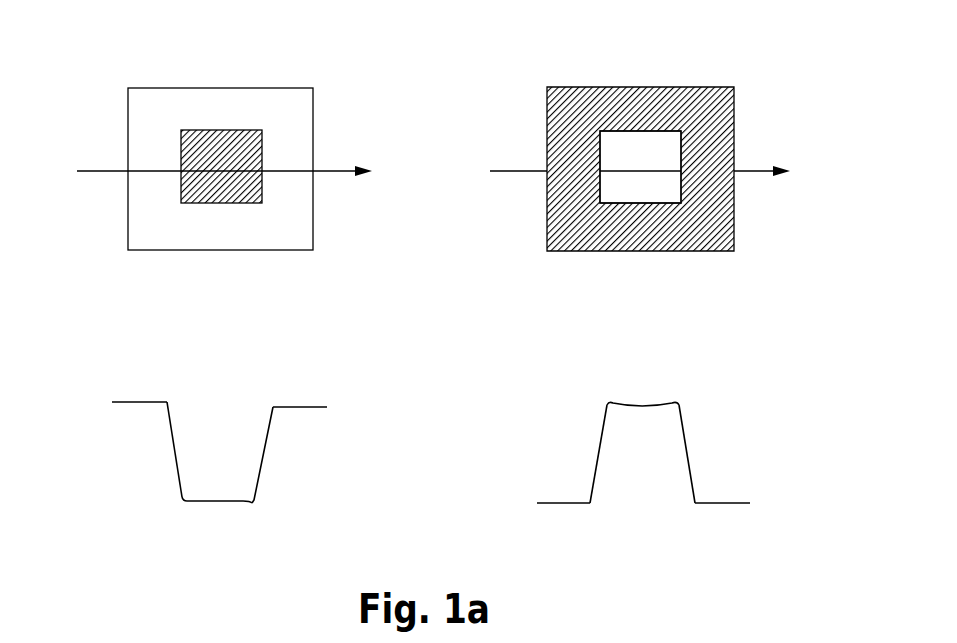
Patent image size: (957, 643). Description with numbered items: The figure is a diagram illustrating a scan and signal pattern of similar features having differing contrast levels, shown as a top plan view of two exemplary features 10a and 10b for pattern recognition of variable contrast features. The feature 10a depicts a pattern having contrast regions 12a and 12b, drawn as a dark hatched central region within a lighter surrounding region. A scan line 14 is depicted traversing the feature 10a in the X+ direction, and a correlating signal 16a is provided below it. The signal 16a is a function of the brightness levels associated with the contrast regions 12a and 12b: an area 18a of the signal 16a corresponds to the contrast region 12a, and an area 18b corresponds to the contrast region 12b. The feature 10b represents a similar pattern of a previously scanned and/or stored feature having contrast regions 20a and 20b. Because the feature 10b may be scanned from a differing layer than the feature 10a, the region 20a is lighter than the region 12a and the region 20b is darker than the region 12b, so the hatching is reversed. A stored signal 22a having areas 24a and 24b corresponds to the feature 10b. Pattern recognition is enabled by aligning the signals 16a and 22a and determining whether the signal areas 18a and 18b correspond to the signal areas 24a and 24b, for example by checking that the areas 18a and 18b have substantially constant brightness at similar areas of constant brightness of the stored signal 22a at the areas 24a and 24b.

The feature 10a is at (242, 154).
The contrast region 12a is at (248, 130).
The contrast region 12b is at (270, 252).
The scan line 14 is at (335, 168).
The feature 10b is at (645, 154).
The contrast region 20a is at (650, 145).
The contrast region 20b is at (673, 252).
The correlating signal 16a is at (252, 443).
The area of signal 18a is at (148, 408).
The area of signal 18b is at (213, 512).
The stored signal 22a is at (676, 439).
The area of stored signal 24a is at (567, 512).
The area of stored signal 24b is at (662, 415).